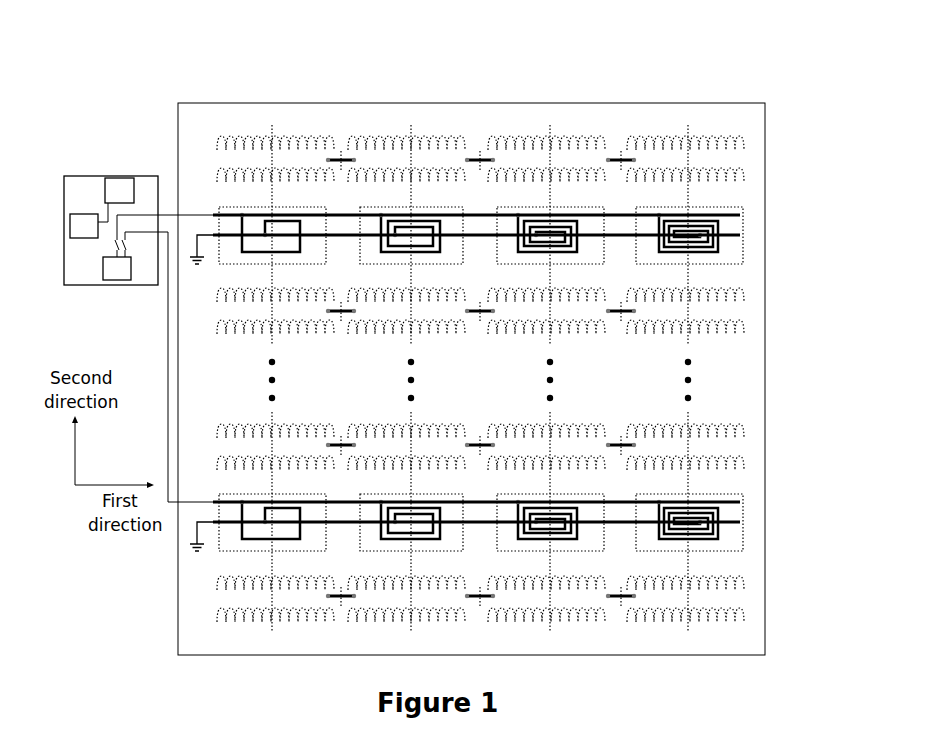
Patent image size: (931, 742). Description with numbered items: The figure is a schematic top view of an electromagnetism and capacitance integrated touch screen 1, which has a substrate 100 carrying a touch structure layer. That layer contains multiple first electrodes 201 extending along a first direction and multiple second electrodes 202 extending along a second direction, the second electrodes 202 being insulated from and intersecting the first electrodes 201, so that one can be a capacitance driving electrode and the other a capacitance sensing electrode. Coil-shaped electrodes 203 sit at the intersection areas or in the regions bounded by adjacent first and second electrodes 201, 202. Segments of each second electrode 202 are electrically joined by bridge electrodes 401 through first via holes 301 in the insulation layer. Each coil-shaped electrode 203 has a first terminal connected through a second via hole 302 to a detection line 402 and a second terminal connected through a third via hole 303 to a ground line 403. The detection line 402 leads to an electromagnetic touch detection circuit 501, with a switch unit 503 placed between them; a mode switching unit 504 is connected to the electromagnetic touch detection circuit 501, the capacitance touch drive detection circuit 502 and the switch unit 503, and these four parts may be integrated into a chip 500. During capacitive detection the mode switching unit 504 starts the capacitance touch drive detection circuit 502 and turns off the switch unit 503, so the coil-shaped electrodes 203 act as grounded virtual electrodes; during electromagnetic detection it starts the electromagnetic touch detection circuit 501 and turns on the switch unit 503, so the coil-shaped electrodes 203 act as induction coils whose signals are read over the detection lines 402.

The electromagnetism and capacitance integrated touch screen 1 is at (145, 34).
The substrate 100 is at (245, 112).
The first electrode 201 is at (640, 190).
The second electrode 202 is at (710, 160).
The coil-shaped electrode 203 is at (707, 255).
The first via hole 301 is at (492, 158).
The second via hole 302 is at (660, 213).
The third via hole 303 is at (697, 237).
The bridge electrode 401 is at (620, 155).
The detection line 402 is at (740, 207).
The ground line 403 is at (736, 237).
The chip 500 is at (97, 200).
The electromagnetic touch detection circuit 501 is at (106, 272).
The capacitance touch drive detection circuit 502 is at (113, 186).
The switch unit 503 is at (112, 243).
The mode switching unit 504 is at (92, 220).